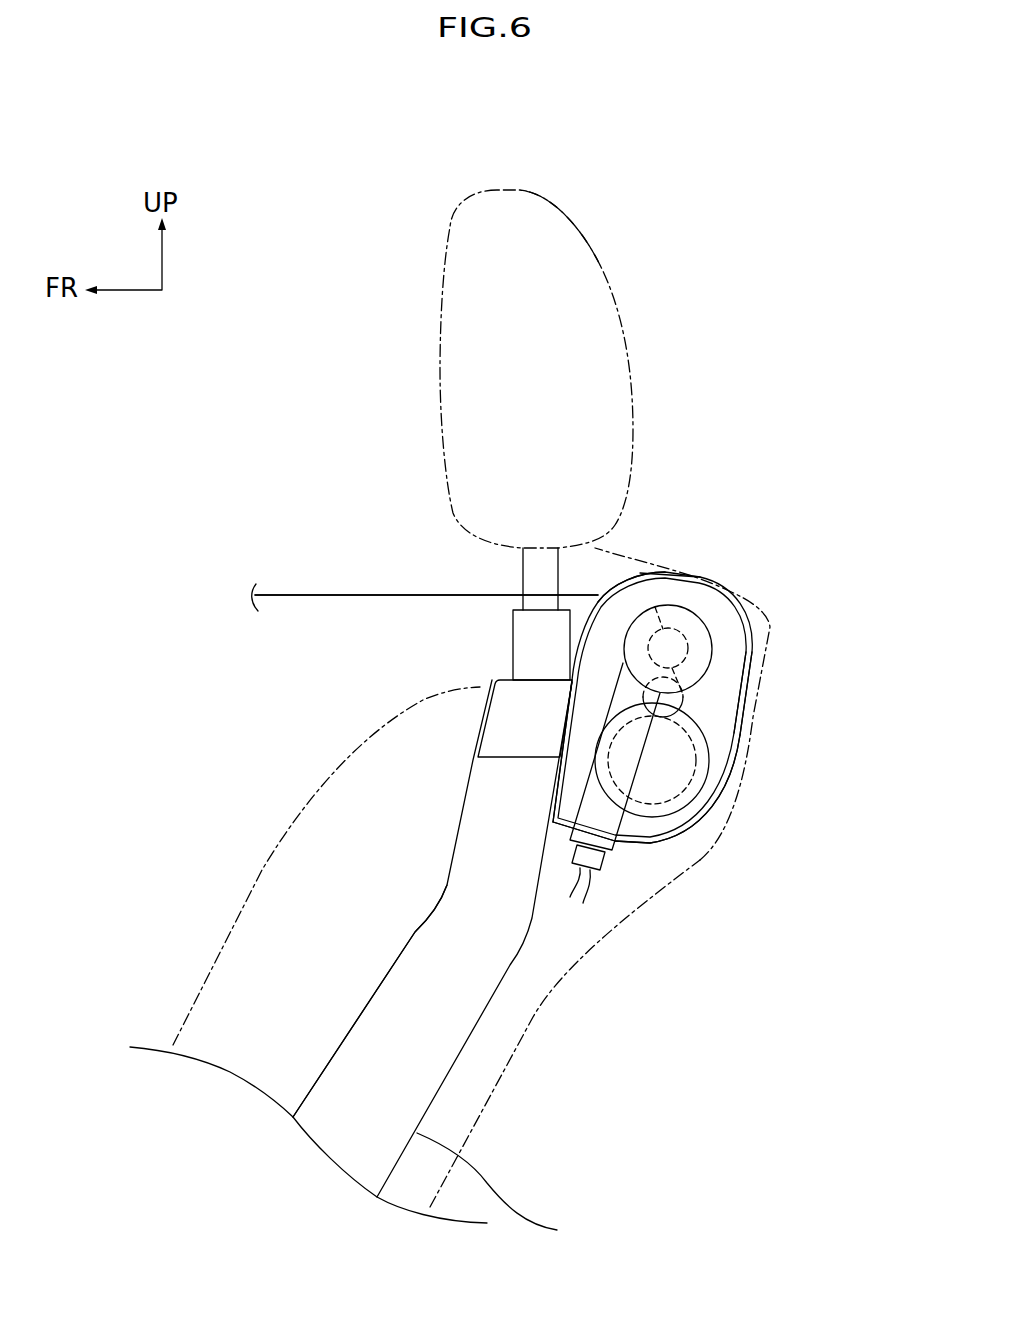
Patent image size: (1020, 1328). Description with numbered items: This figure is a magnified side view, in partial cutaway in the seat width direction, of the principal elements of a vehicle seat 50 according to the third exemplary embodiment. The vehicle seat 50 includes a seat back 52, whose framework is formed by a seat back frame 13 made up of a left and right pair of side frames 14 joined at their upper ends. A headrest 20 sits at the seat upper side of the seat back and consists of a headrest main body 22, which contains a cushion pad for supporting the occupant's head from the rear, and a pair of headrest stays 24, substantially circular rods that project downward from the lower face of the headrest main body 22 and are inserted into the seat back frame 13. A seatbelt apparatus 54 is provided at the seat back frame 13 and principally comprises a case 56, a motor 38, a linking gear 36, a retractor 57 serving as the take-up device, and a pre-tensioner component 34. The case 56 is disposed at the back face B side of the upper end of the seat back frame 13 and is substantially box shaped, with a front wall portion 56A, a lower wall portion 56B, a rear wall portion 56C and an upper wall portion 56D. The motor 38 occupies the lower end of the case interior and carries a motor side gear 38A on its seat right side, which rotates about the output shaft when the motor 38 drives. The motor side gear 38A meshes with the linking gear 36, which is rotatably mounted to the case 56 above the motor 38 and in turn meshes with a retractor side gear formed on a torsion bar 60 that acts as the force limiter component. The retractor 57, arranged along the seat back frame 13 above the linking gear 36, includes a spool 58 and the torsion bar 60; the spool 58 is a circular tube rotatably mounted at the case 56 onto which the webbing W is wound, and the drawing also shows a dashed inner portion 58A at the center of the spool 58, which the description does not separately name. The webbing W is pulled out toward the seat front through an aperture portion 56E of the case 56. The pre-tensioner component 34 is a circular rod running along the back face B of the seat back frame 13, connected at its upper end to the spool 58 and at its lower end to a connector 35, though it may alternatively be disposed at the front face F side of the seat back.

The seat back frame 13 is at (476, 1108).
The side frame 14 is at (384, 955).
The headrest 20 is at (636, 272).
The headrest main body 22 is at (625, 327).
The headrest stay 24 is at (523, 580).
The pre-tensioner component 34 is at (553, 807).
The connector 35 is at (547, 852).
The linking gear 36 is at (685, 700).
The motor 38 is at (702, 804).
The motor side gear 38A is at (710, 767).
The vehicle seat 50 is at (220, 645).
The seat back 52 is at (211, 884).
The seatbelt apparatus 54 is at (748, 568).
The case 56 is at (674, 561).
The front wall portion 56A is at (513, 648).
The lower wall portion 56B is at (620, 847).
The rear wall portion 56C is at (748, 717).
The upper wall portion 56D is at (693, 575).
The aperture portion 56E is at (593, 593).
The retractor 57 is at (731, 616).
The spool 58 is at (713, 647).
The gear shaft portion 58A is at (705, 655).
The torsion bar 60 is at (652, 615).
The webbing W is at (365, 594).
The front face F is at (327, 1062).
The back face B is at (499, 1191).